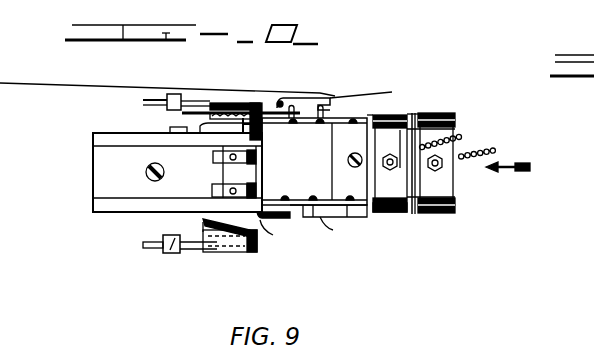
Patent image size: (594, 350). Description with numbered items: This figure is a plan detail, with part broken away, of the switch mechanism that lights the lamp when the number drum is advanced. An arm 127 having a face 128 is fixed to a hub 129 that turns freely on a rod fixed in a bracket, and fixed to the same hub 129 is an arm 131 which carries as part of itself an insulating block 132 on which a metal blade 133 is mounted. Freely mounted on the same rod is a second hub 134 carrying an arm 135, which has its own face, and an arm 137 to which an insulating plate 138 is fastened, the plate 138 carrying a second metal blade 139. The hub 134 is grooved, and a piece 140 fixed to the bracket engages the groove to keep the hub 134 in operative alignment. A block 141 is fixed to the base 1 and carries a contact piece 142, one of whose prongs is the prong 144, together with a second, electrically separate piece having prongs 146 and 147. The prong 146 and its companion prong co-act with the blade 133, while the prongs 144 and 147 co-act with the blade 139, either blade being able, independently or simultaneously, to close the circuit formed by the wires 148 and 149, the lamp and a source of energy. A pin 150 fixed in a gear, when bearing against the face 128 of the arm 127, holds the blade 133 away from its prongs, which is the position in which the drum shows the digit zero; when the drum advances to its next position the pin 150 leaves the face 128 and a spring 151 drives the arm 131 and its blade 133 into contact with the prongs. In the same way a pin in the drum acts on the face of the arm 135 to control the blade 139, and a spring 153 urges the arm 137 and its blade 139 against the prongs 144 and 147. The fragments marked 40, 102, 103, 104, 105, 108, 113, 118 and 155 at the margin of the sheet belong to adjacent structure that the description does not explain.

The base 1 is at (545, 0).
The frame 40 is at (455, 12).
The guide 102 is at (143, 20).
The guide 103 is at (185, 20).
The bar 104 is at (231, 21).
The wedge 105 is at (296, 22).
The rail 108 is at (128, 12).
The support bar 113 is at (94, 37).
The carrier 118 is at (373, 10).
The arm 127 is at (243, 250).
The face 128 is at (143, 247).
The hub 129 is at (203, 232).
The arm 131 is at (320, 218).
The insulating block 132 is at (358, 217).
The metal blade 133 is at (410, 214).
The hub 134 is at (245, 103).
The arm 135 is at (143, 100).
The arm 137 is at (317, 100).
The insulating plate 138 is at (388, 104).
The metal blade 139 is at (440, 112).
The piece 140 is at (200, 102).
The block 141 is at (345, 172).
The contact piece 142 is at (420, 182).
The prong 144 is at (453, 97).
The prong 146 is at (452, 192).
The prong 147 is at (392, 98).
The wire 148 is at (462, 138).
The wire 149 is at (506, 156).
The pin 150 is at (170, 253).
The spring 151 is at (272, 227).
The spring 153 is at (279, 100).
The rod 155 is at (167, 90).